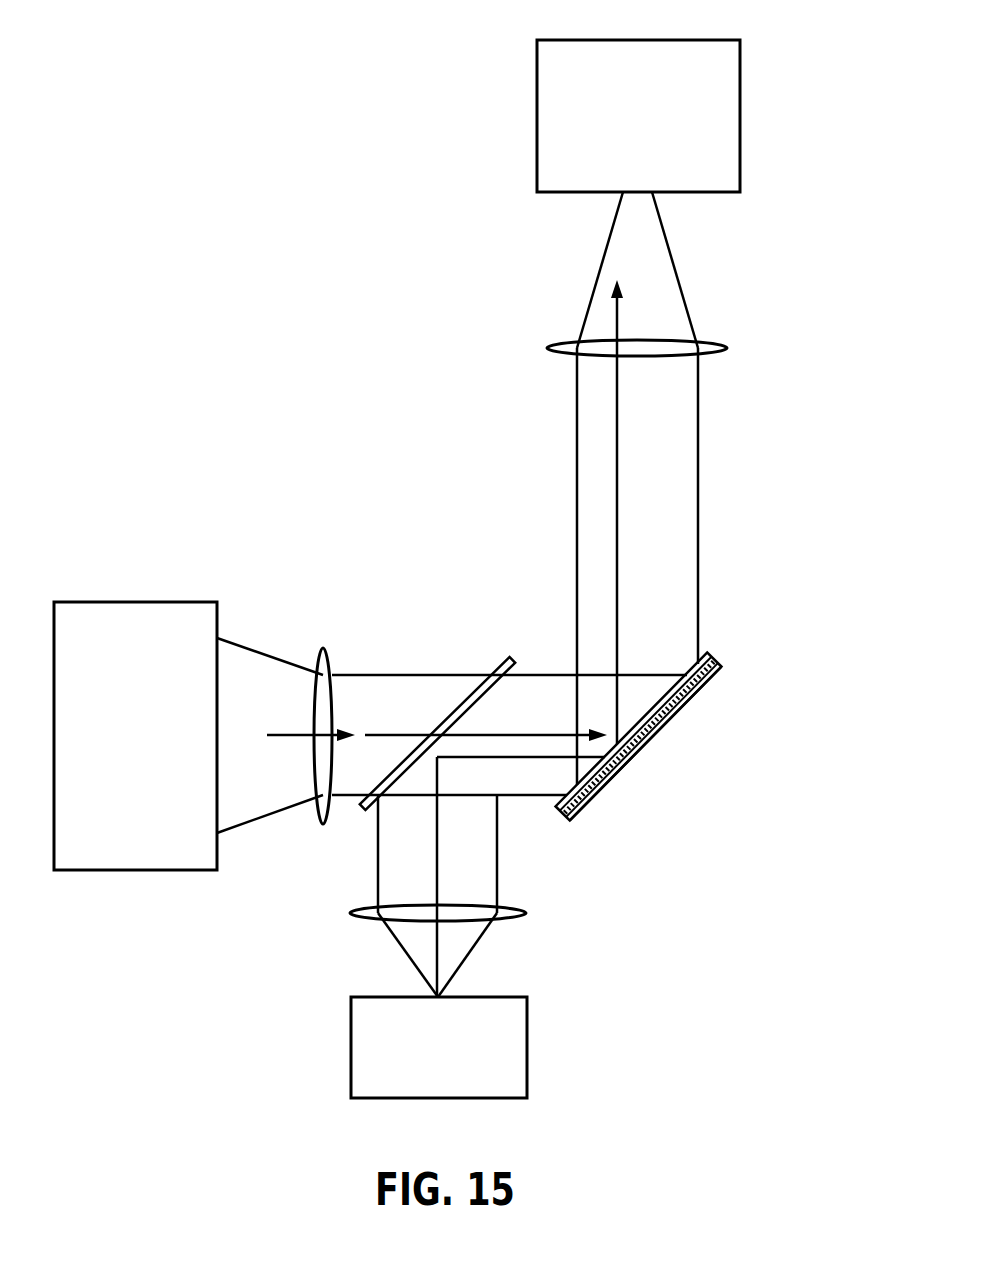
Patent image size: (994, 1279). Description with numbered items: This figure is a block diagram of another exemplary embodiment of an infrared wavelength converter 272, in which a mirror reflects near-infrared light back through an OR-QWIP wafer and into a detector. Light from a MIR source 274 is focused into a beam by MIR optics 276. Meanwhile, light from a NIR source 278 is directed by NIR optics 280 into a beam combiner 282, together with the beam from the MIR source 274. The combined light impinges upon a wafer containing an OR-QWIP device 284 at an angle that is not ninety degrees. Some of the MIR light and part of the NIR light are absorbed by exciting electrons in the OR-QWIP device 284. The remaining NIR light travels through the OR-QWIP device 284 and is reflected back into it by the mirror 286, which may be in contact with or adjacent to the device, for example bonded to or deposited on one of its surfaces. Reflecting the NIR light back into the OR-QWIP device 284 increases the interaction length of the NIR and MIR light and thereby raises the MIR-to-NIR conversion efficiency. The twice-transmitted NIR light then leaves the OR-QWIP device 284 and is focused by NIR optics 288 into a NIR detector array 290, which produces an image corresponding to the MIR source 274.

The infrared wavelength converter 272 is at (196, 78).
The MIR source 274 is at (135, 602).
The MIR optics 276 is at (332, 662).
The NIR source 278 is at (351, 1045).
The NIR optics 280 is at (352, 913).
The beam combiner 282 is at (498, 665).
The OR-QWIP device 284 is at (603, 787).
The mirror 286 is at (700, 694).
The NIR optics 288 is at (567, 345).
The NIR detector array 290 is at (637, 40).